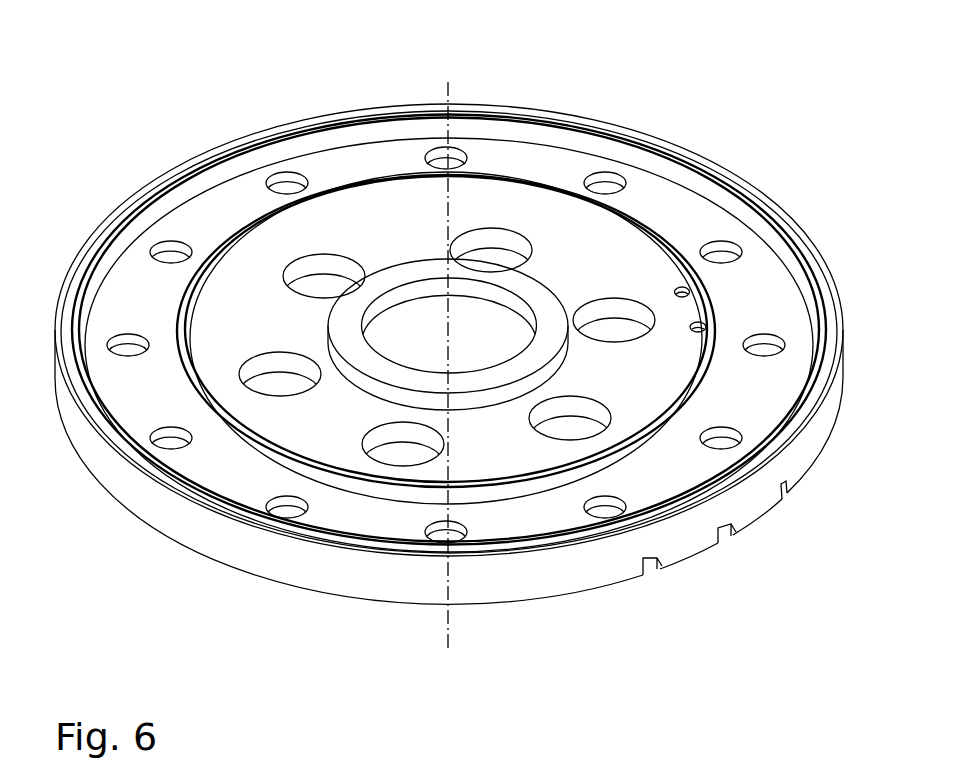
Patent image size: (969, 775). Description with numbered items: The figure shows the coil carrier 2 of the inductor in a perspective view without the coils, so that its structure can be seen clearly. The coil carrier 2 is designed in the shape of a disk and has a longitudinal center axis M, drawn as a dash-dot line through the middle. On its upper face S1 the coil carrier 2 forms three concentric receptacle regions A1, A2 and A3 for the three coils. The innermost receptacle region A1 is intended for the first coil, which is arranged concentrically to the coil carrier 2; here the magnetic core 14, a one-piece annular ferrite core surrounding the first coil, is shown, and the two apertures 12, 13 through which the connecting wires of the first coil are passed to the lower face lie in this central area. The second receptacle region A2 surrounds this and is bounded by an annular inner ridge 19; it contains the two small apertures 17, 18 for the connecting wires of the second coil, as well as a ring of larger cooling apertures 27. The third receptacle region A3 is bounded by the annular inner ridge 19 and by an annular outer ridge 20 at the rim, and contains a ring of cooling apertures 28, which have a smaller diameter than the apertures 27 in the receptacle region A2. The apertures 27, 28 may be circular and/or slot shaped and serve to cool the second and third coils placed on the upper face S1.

The coil carrier 2 is at (318, 585).
The aperture 12 is at (453, 302).
The aperture 13 is at (485, 307).
The magnetic core 14 is at (477, 272).
The aperture 17 is at (682, 289).
The aperture 18 is at (699, 324).
The annular inner ridge 19 is at (372, 173).
The annular outer ridge 20 is at (423, 110).
The apertures 27 is at (403, 462).
The apertures 28 is at (288, 506).
The longitudinal center axis M is at (449, 596).
The upper face S1 is at (255, 147).
The receptacle region A1 is at (413, 344).
The receptacle region A2 is at (271, 319).
The receptacle region A3 is at (206, 218).